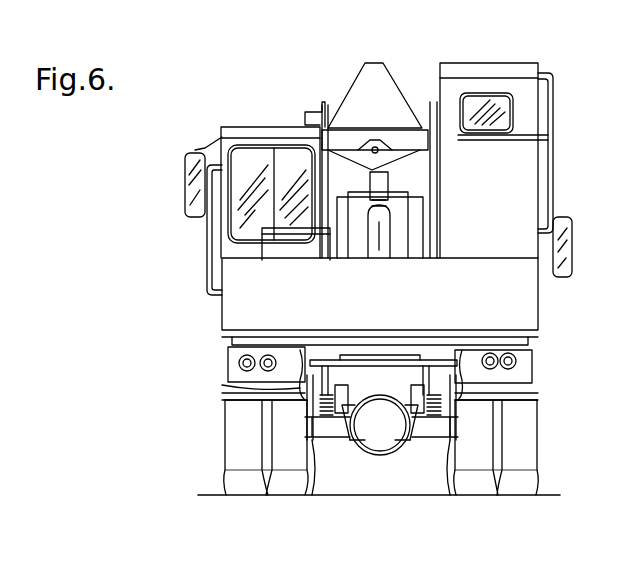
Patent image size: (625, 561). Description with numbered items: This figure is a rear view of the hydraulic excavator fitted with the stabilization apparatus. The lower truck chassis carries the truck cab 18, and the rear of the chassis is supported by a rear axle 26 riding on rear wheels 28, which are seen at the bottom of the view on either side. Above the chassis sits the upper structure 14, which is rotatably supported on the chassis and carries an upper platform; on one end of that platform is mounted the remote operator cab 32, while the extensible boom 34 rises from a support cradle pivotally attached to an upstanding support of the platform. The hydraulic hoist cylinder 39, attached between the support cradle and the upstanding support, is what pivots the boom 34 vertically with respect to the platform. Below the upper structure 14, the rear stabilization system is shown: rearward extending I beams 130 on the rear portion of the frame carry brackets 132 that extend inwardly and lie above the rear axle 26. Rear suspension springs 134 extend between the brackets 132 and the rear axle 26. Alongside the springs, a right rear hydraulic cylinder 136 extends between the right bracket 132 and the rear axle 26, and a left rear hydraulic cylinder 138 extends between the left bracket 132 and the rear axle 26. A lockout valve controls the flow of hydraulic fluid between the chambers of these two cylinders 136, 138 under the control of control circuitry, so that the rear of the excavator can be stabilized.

The upper structure 14 is at (220, 318).
The truck cab 18 is at (237, 135).
The rear axle 26 is at (376, 445).
The rear wheels 28 is at (238, 488).
The remote operator cab 32 is at (510, 72).
The extensible boom 34 is at (392, 64).
The hydraulic hoist cylinder 39 is at (380, 256).
The I beams 130 is at (280, 388).
The brackets 132 is at (330, 370).
The rear suspension springs 134 is at (318, 408).
The right rear hydraulic cylinder 136 is at (421, 447).
The left rear hydraulic cylinder 138 is at (348, 460).